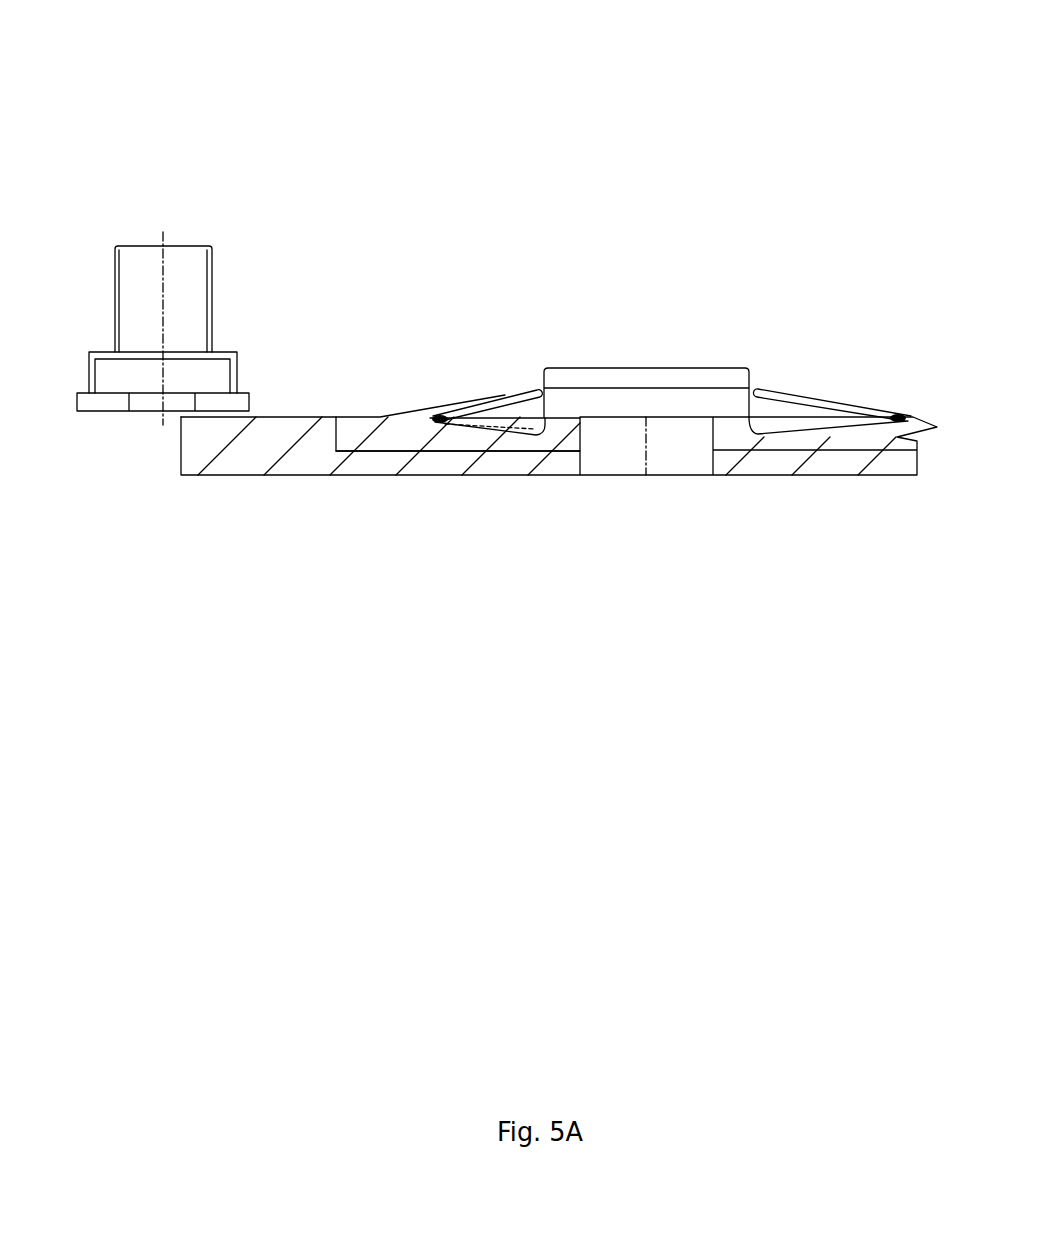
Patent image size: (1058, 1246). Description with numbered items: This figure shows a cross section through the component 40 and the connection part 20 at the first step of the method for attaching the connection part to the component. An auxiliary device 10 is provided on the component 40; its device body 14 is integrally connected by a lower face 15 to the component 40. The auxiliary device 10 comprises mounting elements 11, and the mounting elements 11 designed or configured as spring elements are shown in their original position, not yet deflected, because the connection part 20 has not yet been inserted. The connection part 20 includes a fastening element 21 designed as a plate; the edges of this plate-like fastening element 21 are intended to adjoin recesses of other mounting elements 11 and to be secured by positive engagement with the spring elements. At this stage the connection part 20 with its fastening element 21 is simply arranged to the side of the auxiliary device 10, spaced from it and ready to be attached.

The auxiliary device 10 is at (384, 362).
The mounting elements 11 is at (592, 388).
The device body 14 is at (450, 433).
The lower face 15 is at (425, 450).
The connection part 20 is at (132, 211).
The fastening element 21 is at (117, 400).
The component 40 is at (272, 533).